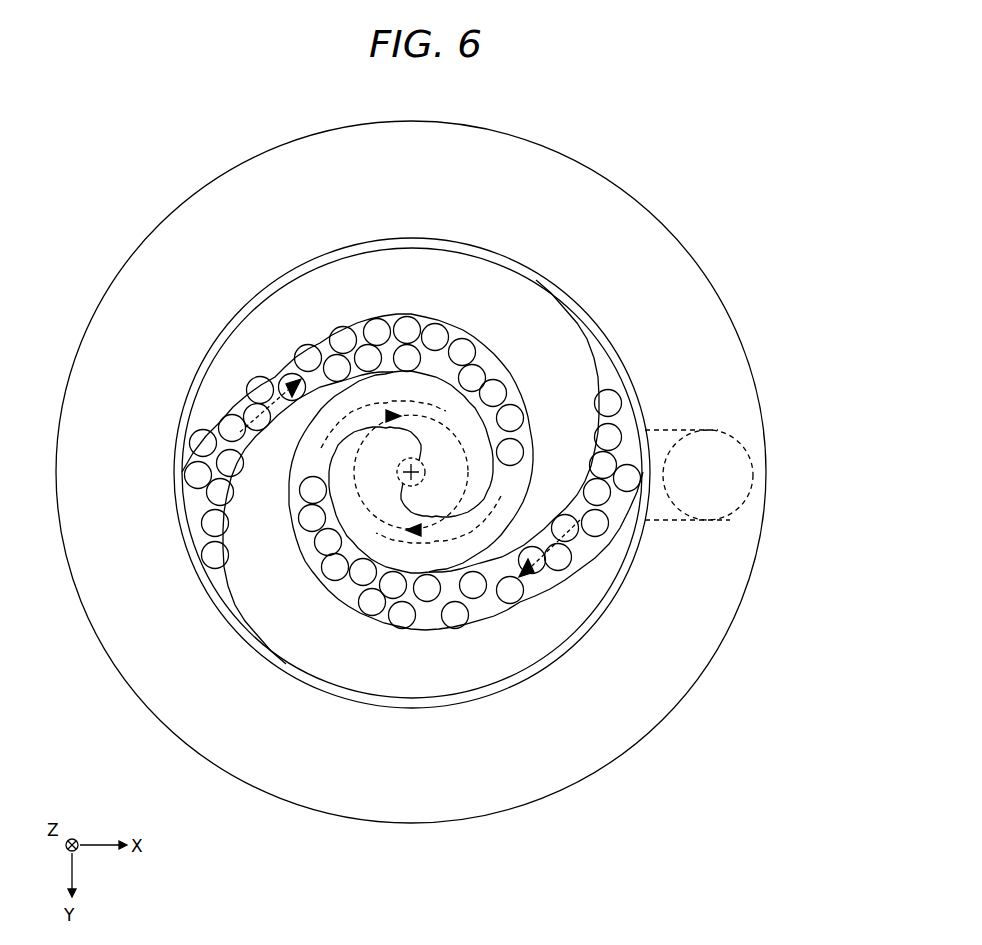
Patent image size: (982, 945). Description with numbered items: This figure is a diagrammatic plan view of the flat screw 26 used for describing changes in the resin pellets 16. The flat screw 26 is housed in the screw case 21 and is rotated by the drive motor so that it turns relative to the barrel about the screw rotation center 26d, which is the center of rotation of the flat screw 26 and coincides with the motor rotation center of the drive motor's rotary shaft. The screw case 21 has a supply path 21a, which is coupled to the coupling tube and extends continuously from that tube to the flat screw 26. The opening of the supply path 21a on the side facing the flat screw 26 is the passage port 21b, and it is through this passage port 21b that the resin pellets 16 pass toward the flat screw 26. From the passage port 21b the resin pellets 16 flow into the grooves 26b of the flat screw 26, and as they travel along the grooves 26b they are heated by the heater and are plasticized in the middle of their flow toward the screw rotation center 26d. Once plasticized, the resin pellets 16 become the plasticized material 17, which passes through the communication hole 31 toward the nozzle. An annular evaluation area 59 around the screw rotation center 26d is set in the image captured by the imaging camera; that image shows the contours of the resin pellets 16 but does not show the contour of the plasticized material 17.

The resin pellets 16 is at (410, 318).
The plasticized material 17 is at (300, 450).
The screw case 21 is at (722, 333).
The supply path 21a is at (766, 479).
The passage port 21b is at (650, 444).
The flat screw 26 is at (498, 314).
The grooves 26b is at (490, 612).
The screw rotation center 26d is at (414, 470).
The communication hole 31 is at (363, 490).
The annular evaluation area 59 is at (522, 545).